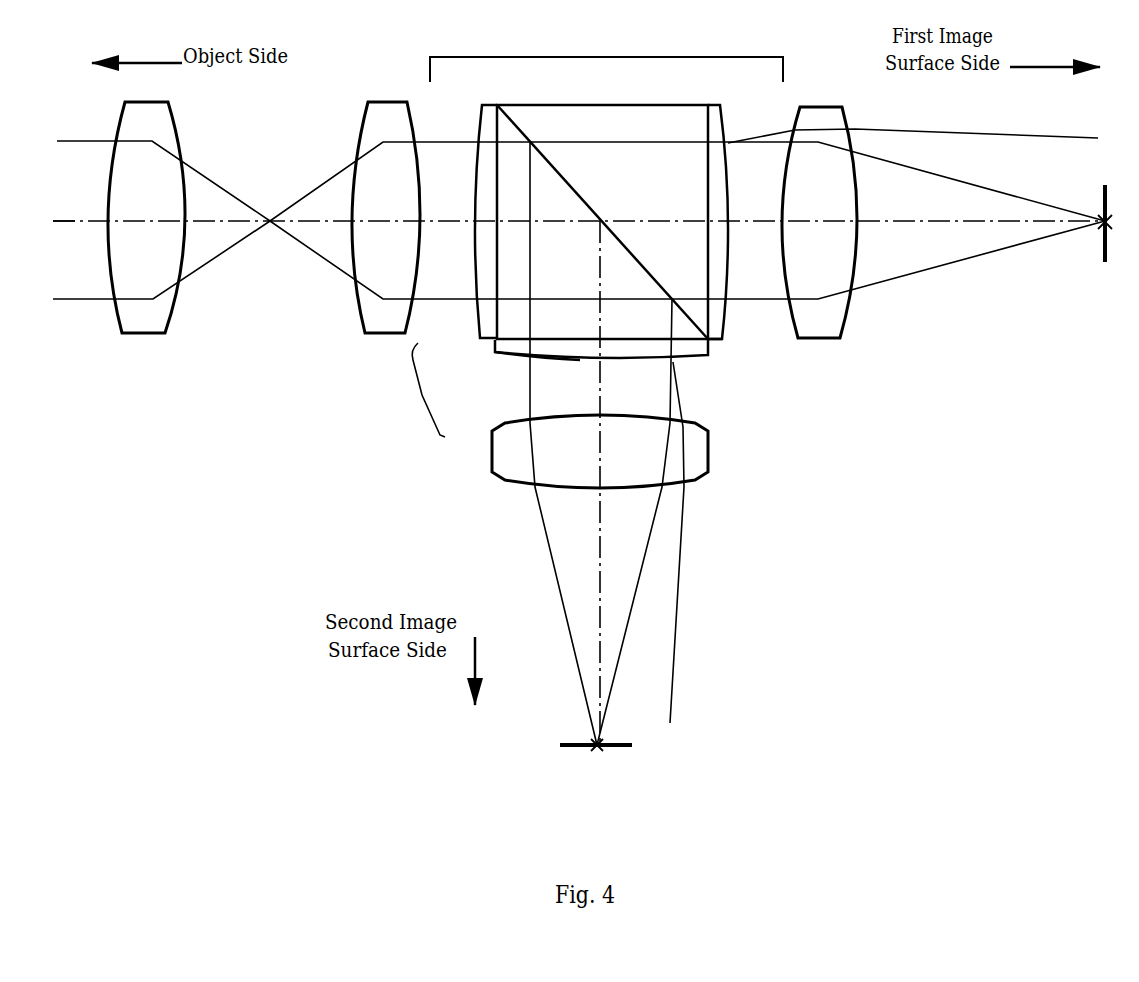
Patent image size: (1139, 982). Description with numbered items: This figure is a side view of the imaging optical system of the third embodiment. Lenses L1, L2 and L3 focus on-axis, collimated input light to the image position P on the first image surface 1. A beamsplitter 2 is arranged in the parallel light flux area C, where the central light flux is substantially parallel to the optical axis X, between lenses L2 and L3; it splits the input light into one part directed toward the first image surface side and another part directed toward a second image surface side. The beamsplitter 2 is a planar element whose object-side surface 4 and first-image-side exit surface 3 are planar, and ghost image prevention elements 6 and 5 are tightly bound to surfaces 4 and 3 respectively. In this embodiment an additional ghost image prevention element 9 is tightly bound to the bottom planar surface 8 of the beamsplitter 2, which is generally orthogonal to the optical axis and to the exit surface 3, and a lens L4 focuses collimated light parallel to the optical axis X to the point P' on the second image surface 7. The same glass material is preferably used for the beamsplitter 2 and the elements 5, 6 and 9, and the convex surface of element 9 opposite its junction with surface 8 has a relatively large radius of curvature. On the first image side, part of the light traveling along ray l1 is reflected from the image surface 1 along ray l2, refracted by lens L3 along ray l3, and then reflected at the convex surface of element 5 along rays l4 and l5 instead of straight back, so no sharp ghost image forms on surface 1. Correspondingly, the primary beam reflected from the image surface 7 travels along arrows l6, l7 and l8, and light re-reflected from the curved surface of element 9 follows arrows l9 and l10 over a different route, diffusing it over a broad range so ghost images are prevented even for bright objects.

The image surface 1 is at (1100, 245).
The beamsplitter 2 is at (653, 118).
The surface on the first image surface side 3 is at (713, 104).
The surface on the object side 4 is at (496, 104).
The ghost image prevention element 5 is at (719, 312).
The ghost image prevention element 6 is at (482, 130).
The image surface 7 is at (585, 744).
The bottom planar surface 8 is at (690, 343).
The ghost image prevention element 9 is at (510, 358).
The lens L1 is at (147, 327).
The lens L2 is at (373, 316).
The lens L3 is at (832, 325).
The lens L4 is at (703, 457).
The parallel light flux area C is at (591, 234).
The optical axis X is at (65, 223).
The image position P is at (1122, 223).
The point P' is at (601, 768).
The light ray l1 is at (965, 273).
The light ray l2 is at (962, 198).
The light ray l3 is at (783, 152).
The light ray l4 is at (787, 125).
The light ray l5 is at (982, 126).
The direction arrow l6 is at (538, 537).
The direction arrow l7 is at (633, 537).
The direction arrow l8 is at (659, 365).
The direction arrow l9 is at (682, 365).
The direction arrow l10 is at (683, 560).